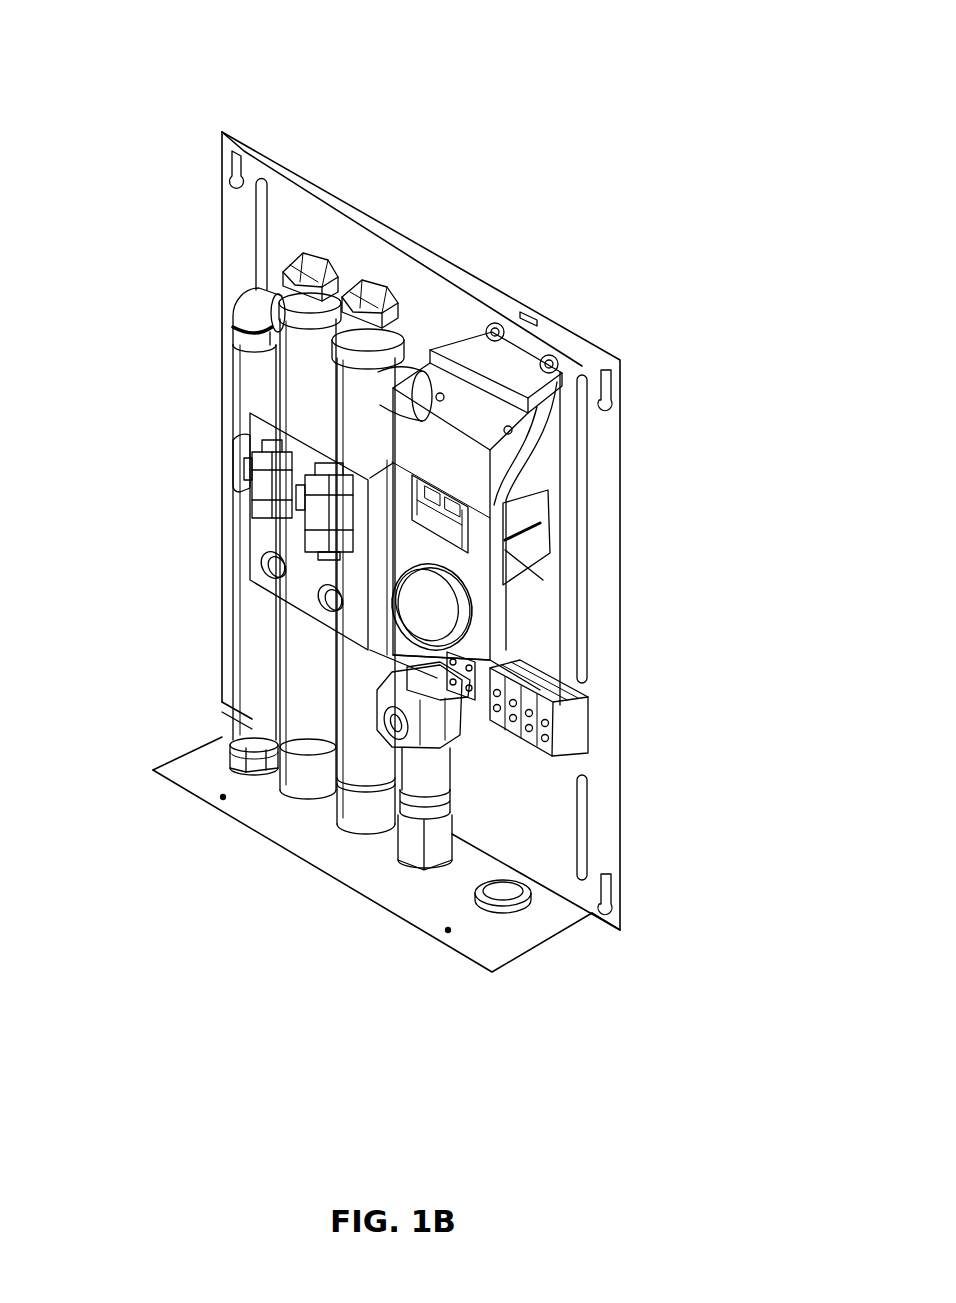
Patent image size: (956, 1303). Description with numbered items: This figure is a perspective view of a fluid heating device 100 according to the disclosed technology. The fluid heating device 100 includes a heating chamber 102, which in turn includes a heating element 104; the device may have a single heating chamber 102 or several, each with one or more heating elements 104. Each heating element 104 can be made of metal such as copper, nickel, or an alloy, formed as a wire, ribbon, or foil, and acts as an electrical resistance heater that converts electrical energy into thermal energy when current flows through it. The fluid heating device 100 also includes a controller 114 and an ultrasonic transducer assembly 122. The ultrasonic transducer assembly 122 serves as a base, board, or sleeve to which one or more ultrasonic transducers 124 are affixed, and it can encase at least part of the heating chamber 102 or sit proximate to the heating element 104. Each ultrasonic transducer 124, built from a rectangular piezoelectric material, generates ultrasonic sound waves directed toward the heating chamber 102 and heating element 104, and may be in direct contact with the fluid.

The fluid heating device 100 is at (155, 62).
The heating chamber 102 is at (297, 400).
The heating element 104 is at (355, 290).
The controller 114 is at (428, 623).
The ultrasonic transducer assembly 122 is at (300, 588).
The ultrasonic transducer 124 is at (262, 562).